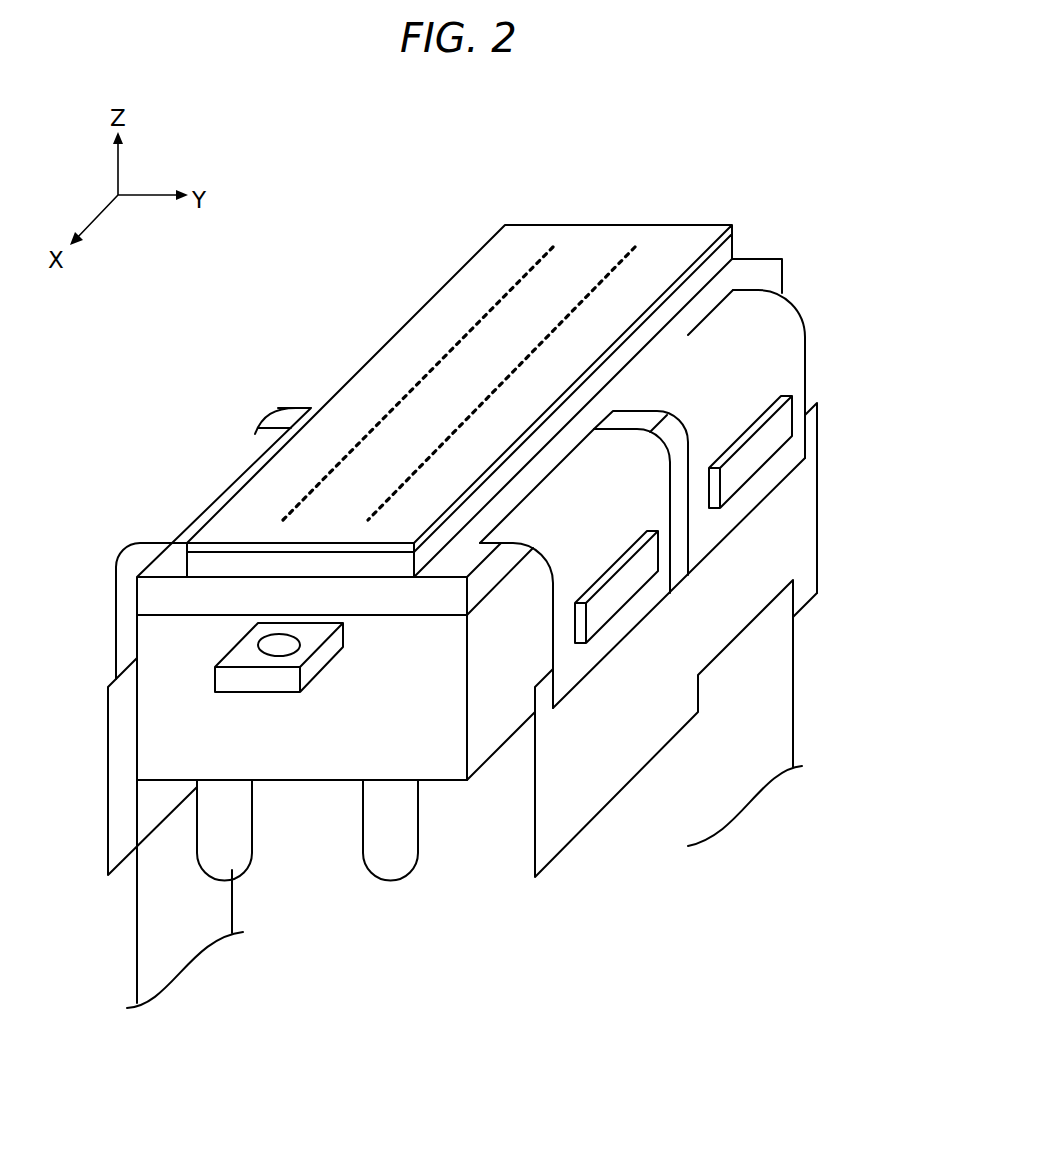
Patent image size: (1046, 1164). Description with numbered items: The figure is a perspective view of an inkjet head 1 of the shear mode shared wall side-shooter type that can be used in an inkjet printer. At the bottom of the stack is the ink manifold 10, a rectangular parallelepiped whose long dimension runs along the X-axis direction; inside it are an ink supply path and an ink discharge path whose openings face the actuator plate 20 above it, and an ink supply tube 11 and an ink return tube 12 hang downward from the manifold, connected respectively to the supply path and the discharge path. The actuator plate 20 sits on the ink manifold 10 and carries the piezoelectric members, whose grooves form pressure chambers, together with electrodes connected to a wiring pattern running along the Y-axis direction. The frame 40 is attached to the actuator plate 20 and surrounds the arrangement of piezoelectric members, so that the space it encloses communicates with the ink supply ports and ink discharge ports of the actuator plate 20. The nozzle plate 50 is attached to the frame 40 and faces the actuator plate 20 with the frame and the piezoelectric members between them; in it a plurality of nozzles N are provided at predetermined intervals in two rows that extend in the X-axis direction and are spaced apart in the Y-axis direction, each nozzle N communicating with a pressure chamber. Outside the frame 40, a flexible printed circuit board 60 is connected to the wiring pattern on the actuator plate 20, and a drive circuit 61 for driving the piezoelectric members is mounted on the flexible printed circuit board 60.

The inkjet head 1 is at (586, 132).
The ink manifold 10 is at (152, 729).
The ink supply tube 11 is at (236, 828).
The ink return tube 12 is at (404, 828).
The actuator plate 20 is at (153, 598).
The frame 40 is at (200, 563).
The nozzle plate 50 is at (500, 250).
The flexible printed circuit board 60 is at (305, 396).
The drive circuit 61 is at (785, 432).
The nozzle N is at (458, 343).